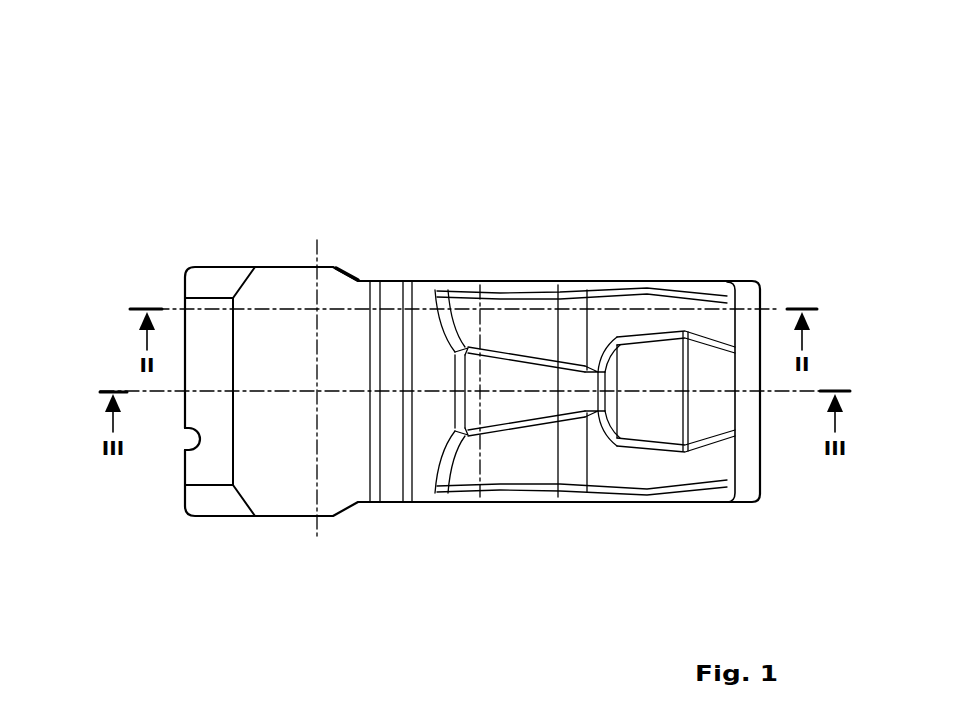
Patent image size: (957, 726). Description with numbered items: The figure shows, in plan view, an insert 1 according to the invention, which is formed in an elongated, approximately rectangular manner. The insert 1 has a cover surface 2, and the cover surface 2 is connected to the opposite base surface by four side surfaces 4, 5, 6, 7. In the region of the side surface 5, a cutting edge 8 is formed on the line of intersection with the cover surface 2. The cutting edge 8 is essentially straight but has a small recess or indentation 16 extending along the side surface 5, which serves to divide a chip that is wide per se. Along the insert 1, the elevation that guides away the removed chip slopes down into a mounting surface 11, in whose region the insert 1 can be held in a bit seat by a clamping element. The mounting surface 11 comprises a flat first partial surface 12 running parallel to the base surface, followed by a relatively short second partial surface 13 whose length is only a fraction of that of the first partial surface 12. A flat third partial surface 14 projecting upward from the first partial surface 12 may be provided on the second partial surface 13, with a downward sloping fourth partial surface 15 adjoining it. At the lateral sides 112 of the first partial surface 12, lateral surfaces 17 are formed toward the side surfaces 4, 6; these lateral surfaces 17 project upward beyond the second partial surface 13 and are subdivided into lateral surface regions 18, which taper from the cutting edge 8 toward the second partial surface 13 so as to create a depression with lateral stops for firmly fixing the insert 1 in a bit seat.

The insert 1 is at (310, 128).
The cover surface 2 is at (345, 340).
The side surface 4 is at (295, 267).
The side surface 5 is at (185, 470).
The side surface 6 is at (592, 500).
The side surface 7 is at (758, 282).
The cutting edge 8 is at (185, 299).
The mounting surface 11 is at (489, 250).
The first partial surface 12 is at (510, 405).
The second partial surface 13 is at (590, 368).
The third partial surface 14 is at (640, 368).
The fourth partial surface 15 is at (705, 370).
The recess or indentation 16 is at (188, 437).
The lateral surfaces 17 is at (535, 475).
The lateral surface regions 18 is at (530, 445).
The lateral sides 112 is at (508, 366).